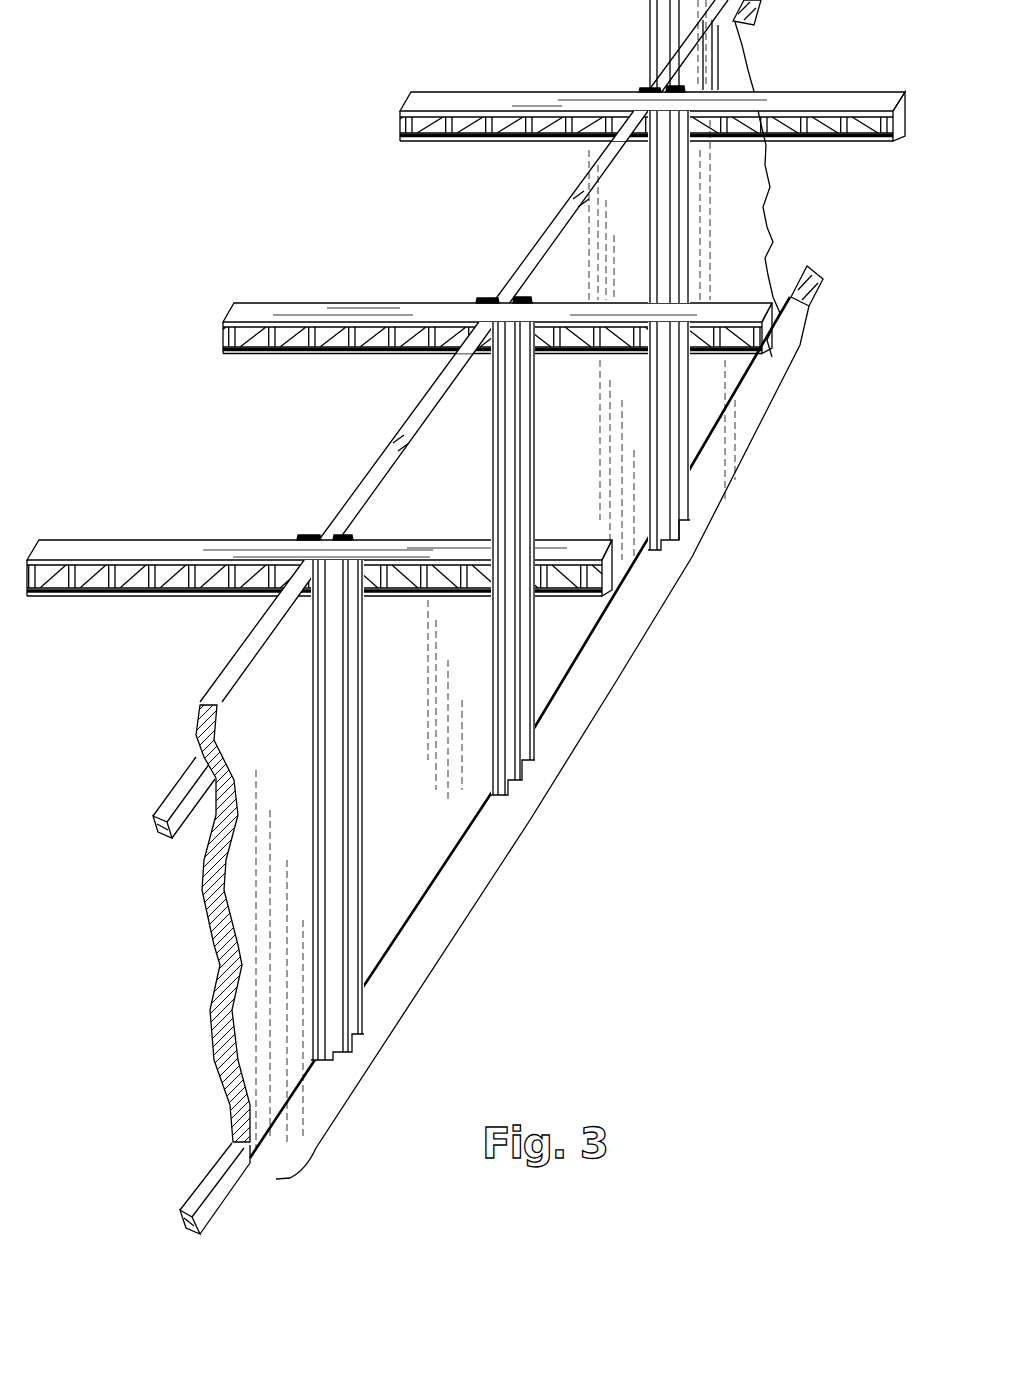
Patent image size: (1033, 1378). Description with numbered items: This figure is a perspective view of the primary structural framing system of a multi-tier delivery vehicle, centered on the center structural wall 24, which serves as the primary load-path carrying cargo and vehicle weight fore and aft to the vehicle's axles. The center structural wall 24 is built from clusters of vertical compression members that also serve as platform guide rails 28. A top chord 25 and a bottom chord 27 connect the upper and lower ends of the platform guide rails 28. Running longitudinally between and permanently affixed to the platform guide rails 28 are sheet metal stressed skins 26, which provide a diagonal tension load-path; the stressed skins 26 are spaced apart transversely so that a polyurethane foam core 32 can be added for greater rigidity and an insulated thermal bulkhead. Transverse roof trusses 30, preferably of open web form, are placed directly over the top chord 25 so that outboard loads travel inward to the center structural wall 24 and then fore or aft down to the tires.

The center structural wall 24 is at (629, 660).
The top chord 25 is at (753, 30).
The stressed skin 26 is at (591, 474).
The bottom chord 27 is at (807, 298).
The platform guide rail 28 is at (672, 88).
The transverse roof truss 30 is at (458, 97).
The polyurethane foam core 32 is at (217, 959).